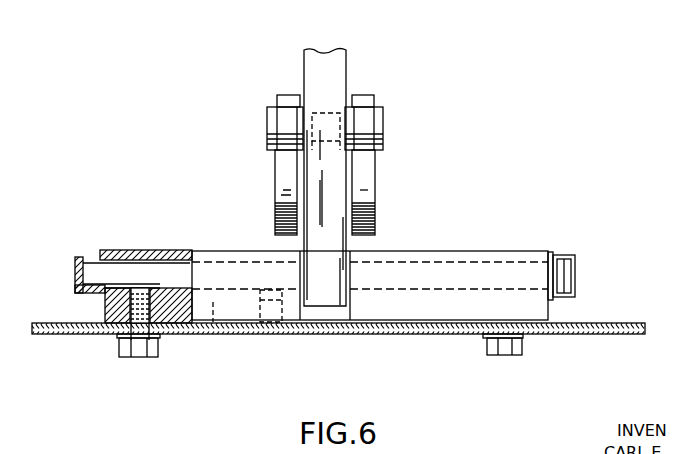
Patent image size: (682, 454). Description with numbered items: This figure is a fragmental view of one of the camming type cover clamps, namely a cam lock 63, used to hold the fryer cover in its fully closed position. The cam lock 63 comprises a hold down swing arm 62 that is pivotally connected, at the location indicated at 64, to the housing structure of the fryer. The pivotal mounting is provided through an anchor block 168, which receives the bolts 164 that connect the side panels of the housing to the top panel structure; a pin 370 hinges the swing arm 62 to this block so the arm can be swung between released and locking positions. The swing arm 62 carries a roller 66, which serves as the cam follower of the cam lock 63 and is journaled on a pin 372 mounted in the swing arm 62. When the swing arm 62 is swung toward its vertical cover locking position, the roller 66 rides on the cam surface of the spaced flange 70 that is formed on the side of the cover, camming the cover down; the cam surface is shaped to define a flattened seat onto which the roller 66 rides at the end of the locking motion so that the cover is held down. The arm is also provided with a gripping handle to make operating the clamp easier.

The hold down swing arm 62 is at (335, 69).
The cam lock 63 is at (427, 160).
The pivotal connection 64 is at (355, 248).
The roller 66 is at (265, 108).
The flange 70 is at (285, 168).
The bolt 164 is at (505, 358).
The anchor block 168 is at (163, 253).
The pin 370 is at (105, 275).
The pin 372 is at (332, 100).